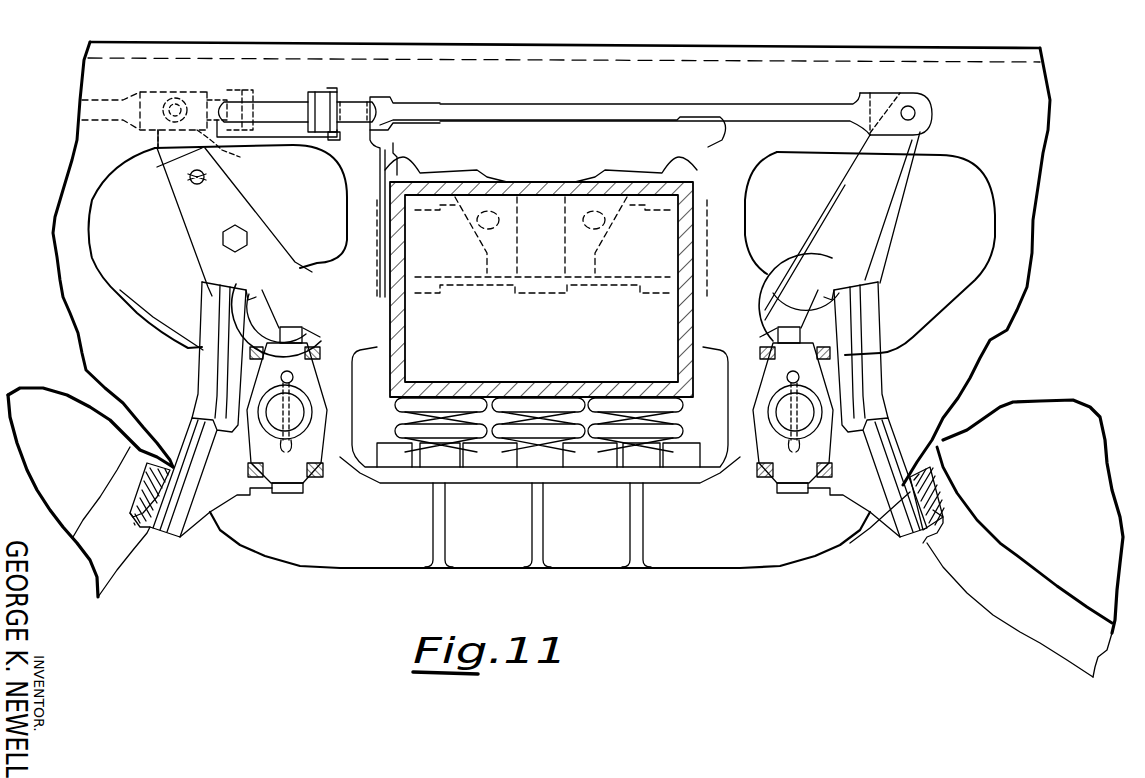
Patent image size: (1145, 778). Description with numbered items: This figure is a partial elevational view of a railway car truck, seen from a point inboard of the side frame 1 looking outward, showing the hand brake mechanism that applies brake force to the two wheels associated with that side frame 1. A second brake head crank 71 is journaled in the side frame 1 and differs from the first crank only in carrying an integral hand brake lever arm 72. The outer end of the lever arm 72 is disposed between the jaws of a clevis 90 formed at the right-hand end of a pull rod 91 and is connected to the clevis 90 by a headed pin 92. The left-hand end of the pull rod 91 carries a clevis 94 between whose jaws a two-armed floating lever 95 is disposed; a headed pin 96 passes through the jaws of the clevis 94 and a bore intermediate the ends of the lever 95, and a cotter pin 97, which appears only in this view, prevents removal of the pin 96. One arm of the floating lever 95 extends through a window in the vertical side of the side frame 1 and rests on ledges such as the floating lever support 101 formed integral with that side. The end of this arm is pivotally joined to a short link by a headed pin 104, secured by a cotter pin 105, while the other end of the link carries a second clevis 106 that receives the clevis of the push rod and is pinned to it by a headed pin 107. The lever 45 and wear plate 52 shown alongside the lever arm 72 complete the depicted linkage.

The side frame 1 is at (668, 70).
The brake lever 45 is at (913, 172).
The lever wear plate 52 is at (905, 205).
The second brake head crank 71 is at (770, 308).
The hand brake lever arm 72 is at (866, 168).
The clevis 90 is at (880, 100).
The pull rod 91 is at (790, 112).
The headed pin 92 is at (913, 111).
The clevis 94 is at (372, 97).
The floating lever 95 is at (267, 110).
The headed pin 96 is at (345, 97).
The cotter pin 97 is at (337, 140).
The floating lever support 101 is at (283, 133).
The headed pin 104 is at (228, 93).
The cotter pin 105 is at (238, 148).
The second clevis 106 is at (215, 105).
The headed pin 107 is at (174, 106).